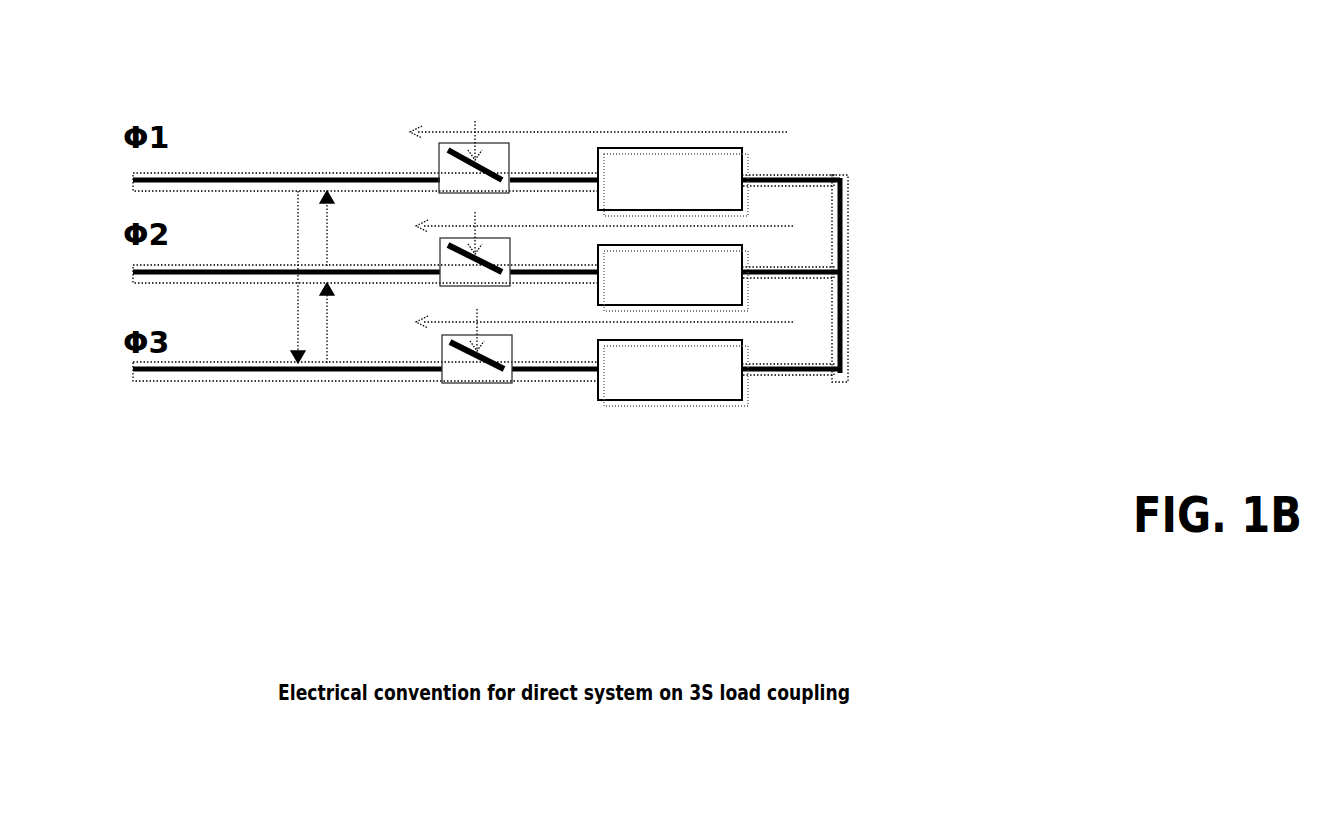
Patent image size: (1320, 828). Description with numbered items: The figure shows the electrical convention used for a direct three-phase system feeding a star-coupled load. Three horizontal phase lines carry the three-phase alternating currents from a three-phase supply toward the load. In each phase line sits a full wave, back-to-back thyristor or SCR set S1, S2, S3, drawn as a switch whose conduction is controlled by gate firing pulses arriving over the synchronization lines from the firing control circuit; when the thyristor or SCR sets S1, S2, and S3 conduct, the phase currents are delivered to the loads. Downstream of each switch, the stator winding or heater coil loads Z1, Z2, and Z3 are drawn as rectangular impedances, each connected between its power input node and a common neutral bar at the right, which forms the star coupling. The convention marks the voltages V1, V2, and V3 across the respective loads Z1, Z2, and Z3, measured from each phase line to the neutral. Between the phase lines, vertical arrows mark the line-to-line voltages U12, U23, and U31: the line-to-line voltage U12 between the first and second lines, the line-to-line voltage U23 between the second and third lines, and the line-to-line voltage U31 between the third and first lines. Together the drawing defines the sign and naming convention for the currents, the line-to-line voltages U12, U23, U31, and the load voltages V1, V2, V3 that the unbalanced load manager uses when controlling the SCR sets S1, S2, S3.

The stator winding or heater coil load Z1 is at (673, 182).
The stator winding or heater coil load Z2 is at (673, 278).
The stator winding or heater coil load Z3 is at (673, 373).
The thyristor or SCR set S1 is at (474, 148).
The thyristor or SCR set S2 is at (475, 240).
The thyristor or SCR set S3 is at (477, 337).
The voltage across load V1 is at (599, 118).
The voltage across load V2 is at (605, 210).
The voltage across load V3 is at (605, 306).
The line-to-line voltage U12 is at (345, 228).
The line-to-line voltage U23 is at (346, 323).
The line-to-line voltage U31 is at (279, 277).